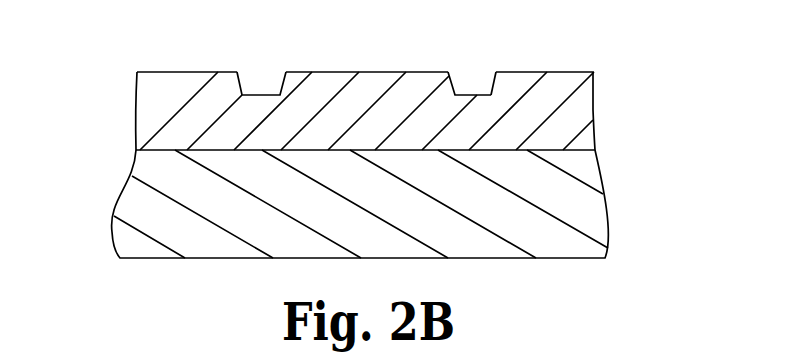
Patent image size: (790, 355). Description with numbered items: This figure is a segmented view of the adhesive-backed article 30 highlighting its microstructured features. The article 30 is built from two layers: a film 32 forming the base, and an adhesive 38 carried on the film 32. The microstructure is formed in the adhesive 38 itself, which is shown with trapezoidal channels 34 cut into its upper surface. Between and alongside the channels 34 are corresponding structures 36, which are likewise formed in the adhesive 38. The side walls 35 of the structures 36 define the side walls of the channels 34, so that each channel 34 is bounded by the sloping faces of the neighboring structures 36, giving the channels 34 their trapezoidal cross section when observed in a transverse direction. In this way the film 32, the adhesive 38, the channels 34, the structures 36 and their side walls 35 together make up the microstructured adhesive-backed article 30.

The adhesive-backed article 30 is at (103, 150).
The film 32 is at (583, 208).
The trapezoidal channels 34 is at (462, 82).
The side walls 35 is at (493, 76).
The structures 36 is at (290, 83).
The adhesive 38 is at (575, 114).